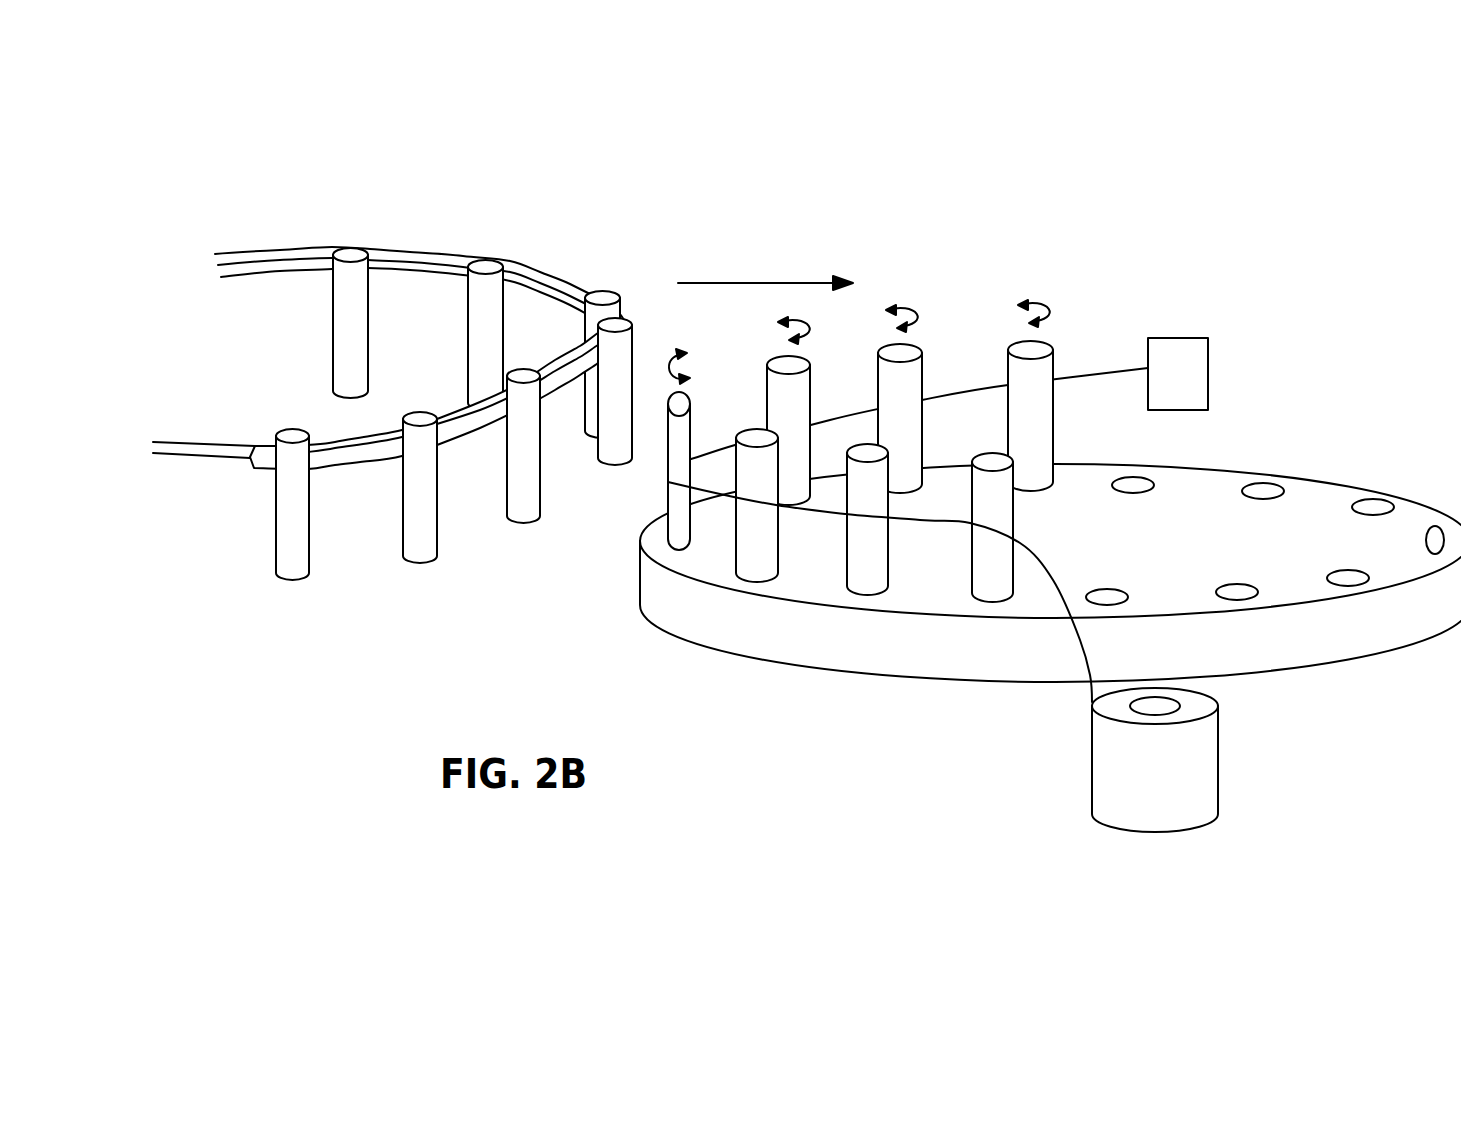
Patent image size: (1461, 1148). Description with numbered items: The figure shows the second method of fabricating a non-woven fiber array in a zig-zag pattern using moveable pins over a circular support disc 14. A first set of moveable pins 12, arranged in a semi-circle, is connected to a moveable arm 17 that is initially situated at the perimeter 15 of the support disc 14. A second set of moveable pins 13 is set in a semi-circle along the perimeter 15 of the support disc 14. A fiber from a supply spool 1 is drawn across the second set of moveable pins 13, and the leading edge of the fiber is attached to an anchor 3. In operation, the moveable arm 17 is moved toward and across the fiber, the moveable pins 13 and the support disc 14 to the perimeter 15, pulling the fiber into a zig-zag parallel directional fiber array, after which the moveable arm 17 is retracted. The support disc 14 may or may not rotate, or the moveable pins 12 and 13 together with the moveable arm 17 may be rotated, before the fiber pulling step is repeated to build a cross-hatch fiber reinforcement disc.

The supply spool 1 is at (1220, 755).
The anchor 3 is at (1210, 375).
The first set of moveable pins 12 is at (277, 523).
The second set of moveable pins 13 is at (1013, 527).
The support disc 14 is at (1193, 562).
The perimeter 15 is at (1437, 508).
The moveable arm 17 is at (262, 440).